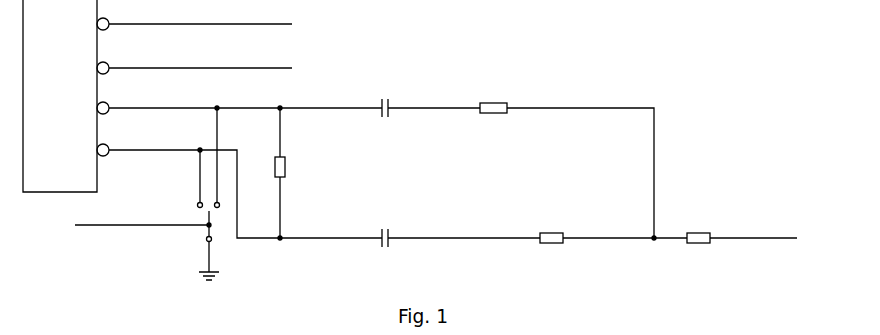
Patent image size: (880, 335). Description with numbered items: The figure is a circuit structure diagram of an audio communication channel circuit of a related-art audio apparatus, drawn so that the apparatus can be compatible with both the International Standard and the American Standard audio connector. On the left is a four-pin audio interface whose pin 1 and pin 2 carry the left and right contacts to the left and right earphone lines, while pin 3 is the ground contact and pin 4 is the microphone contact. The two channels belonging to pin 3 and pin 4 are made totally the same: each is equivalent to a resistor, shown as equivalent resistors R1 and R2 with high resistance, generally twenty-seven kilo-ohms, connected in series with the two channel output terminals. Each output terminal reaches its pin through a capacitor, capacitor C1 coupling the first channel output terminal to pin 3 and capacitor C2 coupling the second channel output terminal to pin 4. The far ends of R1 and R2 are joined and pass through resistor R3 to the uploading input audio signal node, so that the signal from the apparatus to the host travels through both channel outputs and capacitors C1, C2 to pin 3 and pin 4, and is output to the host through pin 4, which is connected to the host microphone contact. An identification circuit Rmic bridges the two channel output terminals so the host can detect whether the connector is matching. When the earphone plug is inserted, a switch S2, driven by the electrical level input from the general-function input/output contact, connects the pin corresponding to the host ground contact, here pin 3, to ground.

The pin 1 is at (183, 19).
The pin 2 is at (183, 63).
The pin 3 is at (228, 103).
The pin 4 is at (228, 184).
The identification circuit Rmic is at (303, 173).
The capacitor C1 is at (431, 105).
The capacitor C2 is at (461, 235).
The equivalent resistor R1 is at (567, 162).
The equivalent resistor R2 is at (613, 229).
The resistor R3 is at (748, 228).
The switch S2 is at (143, 194).